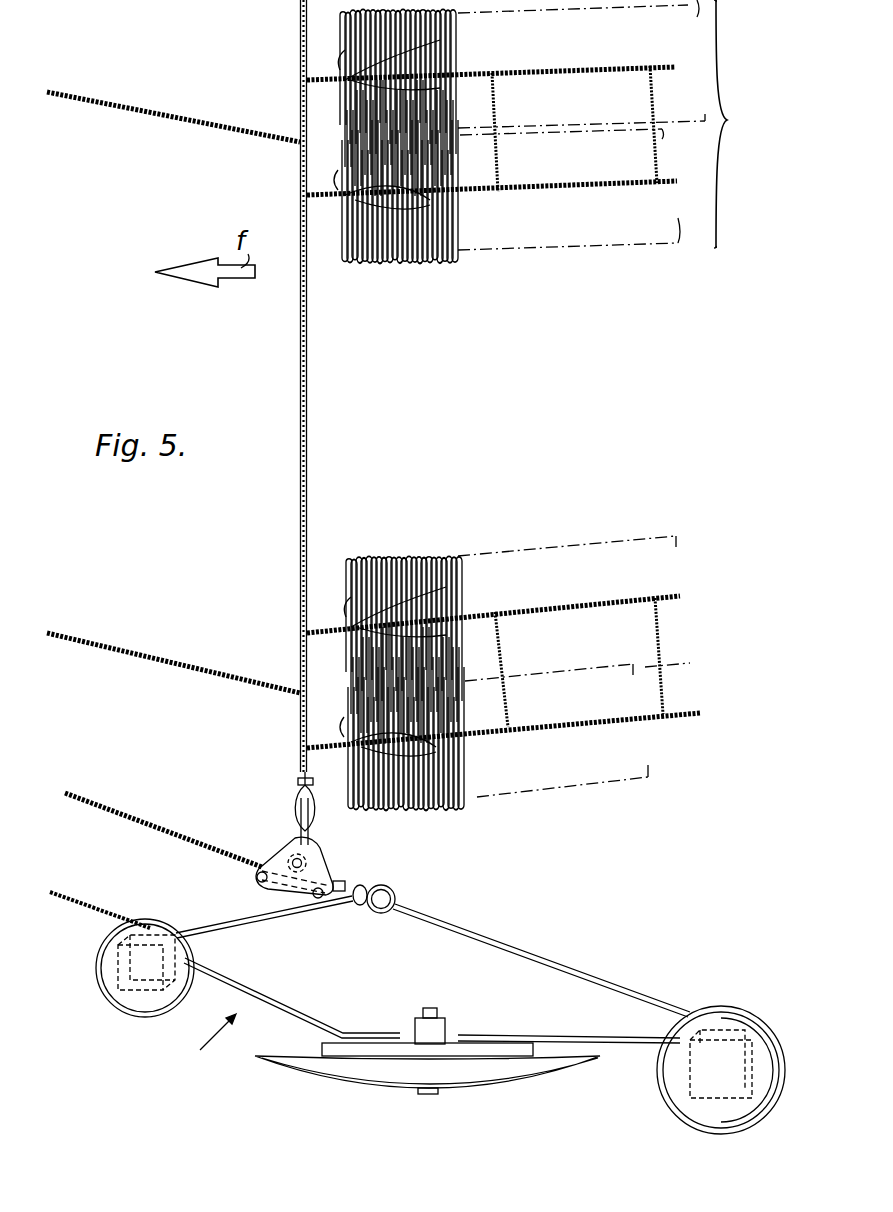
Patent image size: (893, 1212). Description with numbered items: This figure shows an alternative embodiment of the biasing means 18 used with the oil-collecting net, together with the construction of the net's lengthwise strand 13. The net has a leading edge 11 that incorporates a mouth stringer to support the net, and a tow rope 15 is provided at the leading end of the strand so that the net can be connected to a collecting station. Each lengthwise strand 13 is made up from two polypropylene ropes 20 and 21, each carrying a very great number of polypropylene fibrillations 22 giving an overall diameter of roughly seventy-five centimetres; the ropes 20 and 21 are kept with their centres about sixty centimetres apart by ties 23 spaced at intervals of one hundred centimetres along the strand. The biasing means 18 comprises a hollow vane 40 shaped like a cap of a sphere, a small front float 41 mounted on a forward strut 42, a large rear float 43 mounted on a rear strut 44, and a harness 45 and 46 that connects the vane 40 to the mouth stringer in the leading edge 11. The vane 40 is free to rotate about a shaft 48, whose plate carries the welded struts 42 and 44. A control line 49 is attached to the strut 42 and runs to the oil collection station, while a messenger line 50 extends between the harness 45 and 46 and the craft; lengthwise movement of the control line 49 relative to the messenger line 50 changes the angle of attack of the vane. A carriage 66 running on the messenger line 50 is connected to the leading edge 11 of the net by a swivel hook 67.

The leading edge 11 is at (300, 314).
The lengthwise strand 13 is at (618, 557).
The tow rope 15 is at (103, 100).
The biasing means 18 is at (202, 1046).
The polypropylene rope 20 is at (472, 75).
The polypropylene rope 21 is at (462, 196).
The polypropylene fibrillations 22 is at (352, 107).
The tie 23 is at (497, 101).
The hollow vane 40 is at (501, 1073).
The small front float 41 is at (132, 1007).
The forward strut 42 is at (290, 1011).
The large rear float 43 is at (668, 1085).
The rear strut 44 is at (567, 1036).
The harness 45 is at (518, 956).
The harness 46 is at (223, 925).
The shaft 48 is at (436, 1008).
The control line 49 is at (93, 905).
The messenger line 50 is at (140, 820).
The carriage 66 is at (275, 853).
The swivel hook 67 is at (318, 815).